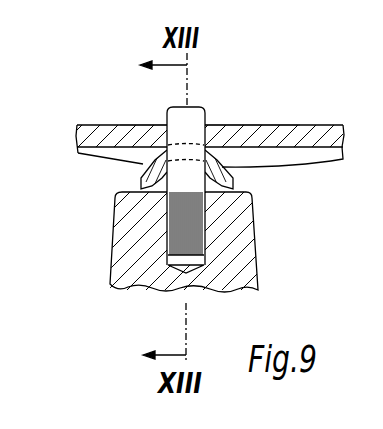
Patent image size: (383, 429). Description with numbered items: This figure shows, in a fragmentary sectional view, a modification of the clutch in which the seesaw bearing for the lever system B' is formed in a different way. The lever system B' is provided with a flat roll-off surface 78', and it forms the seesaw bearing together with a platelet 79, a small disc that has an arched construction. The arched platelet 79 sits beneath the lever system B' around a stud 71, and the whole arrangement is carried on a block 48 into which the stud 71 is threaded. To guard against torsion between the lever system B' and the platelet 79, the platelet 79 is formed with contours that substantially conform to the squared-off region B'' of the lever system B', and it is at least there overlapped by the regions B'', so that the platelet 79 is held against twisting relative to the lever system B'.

The threaded stud 71 is at (193, 117).
The flat roll-off surface 78' is at (206, 115).
The lever system B' is at (226, 104).
The squared-off region B'' is at (210, 184).
The platelet 79 is at (139, 176).
The block 48 is at (247, 277).